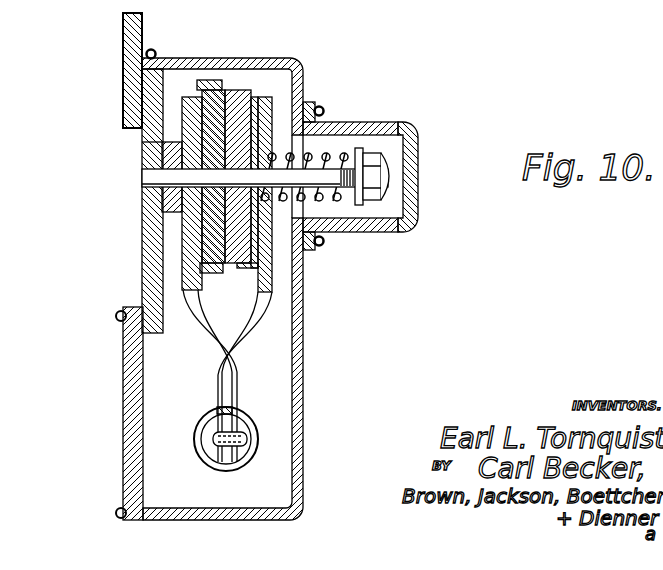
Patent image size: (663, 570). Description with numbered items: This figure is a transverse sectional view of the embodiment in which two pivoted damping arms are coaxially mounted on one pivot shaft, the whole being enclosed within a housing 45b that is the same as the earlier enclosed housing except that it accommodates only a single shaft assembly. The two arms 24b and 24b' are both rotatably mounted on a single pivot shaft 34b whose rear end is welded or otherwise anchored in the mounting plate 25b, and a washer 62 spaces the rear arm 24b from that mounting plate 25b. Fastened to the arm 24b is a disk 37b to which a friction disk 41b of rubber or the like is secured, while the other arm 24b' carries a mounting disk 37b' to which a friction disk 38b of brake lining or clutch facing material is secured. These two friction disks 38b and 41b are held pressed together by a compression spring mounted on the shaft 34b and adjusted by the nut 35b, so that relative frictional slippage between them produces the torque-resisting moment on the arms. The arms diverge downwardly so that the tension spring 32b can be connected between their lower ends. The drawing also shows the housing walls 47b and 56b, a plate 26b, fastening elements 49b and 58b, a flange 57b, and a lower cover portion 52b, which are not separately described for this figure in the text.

The mounting plate 26b is at (123, 46).
The weld ball 49b is at (154, 52).
The housing top wall 47b is at (214, 58).
The housing 45b is at (289, 57).
The flange lip 57b is at (310, 104).
The weld ball 58b is at (323, 110).
The pivot shaft 34b is at (331, 177).
The nut 35b is at (413, 140).
The boss end wall 56b is at (418, 178).
The mounting plate 25b is at (150, 136).
The washer 62 is at (141, 163).
The disk 37b is at (161, 171).
The friction disk 41b is at (200, 241).
The pivoted damping arm 24b is at (148, 279).
The lower wall 52b is at (135, 385).
The tension spring 32b is at (256, 436).
The mounting disk 37b' is at (317, 182).
The friction disk 38b is at (237, 270).
The pivoted damping arm 24b' is at (303, 279).